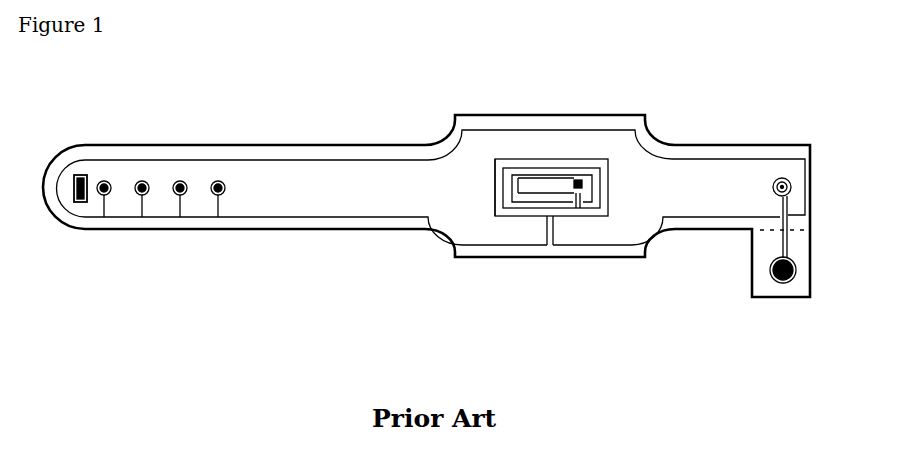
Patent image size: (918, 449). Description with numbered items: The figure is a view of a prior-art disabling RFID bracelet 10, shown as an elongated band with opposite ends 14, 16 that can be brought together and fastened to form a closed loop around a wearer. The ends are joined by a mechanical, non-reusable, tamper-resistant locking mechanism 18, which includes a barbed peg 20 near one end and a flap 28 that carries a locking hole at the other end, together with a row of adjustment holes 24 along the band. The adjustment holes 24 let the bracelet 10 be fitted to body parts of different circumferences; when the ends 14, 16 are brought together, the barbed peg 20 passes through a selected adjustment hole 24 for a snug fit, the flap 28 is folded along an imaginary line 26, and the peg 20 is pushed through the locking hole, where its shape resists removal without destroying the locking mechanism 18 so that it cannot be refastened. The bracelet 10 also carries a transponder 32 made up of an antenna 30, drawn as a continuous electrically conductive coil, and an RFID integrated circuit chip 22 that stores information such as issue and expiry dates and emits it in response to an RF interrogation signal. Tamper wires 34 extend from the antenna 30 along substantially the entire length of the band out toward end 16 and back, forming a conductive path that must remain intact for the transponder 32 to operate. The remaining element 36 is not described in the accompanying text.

The RFID bracelet 10 is at (393, 120).
The end 14 is at (43, 152).
The end 16 is at (812, 148).
The locking mechanism 18 is at (797, 272).
The barbed peg 20 is at (783, 177).
The RFID integrated circuit chip 22 is at (582, 190).
The adjustment hole 24 is at (180, 176).
The imaginary line 26 is at (810, 230).
The flap 28 is at (790, 305).
The antenna 30 is at (531, 218).
The transponder 32 is at (492, 187).
The tamper wires 34 is at (520, 127).
The working electrode 36 is at (81, 204).